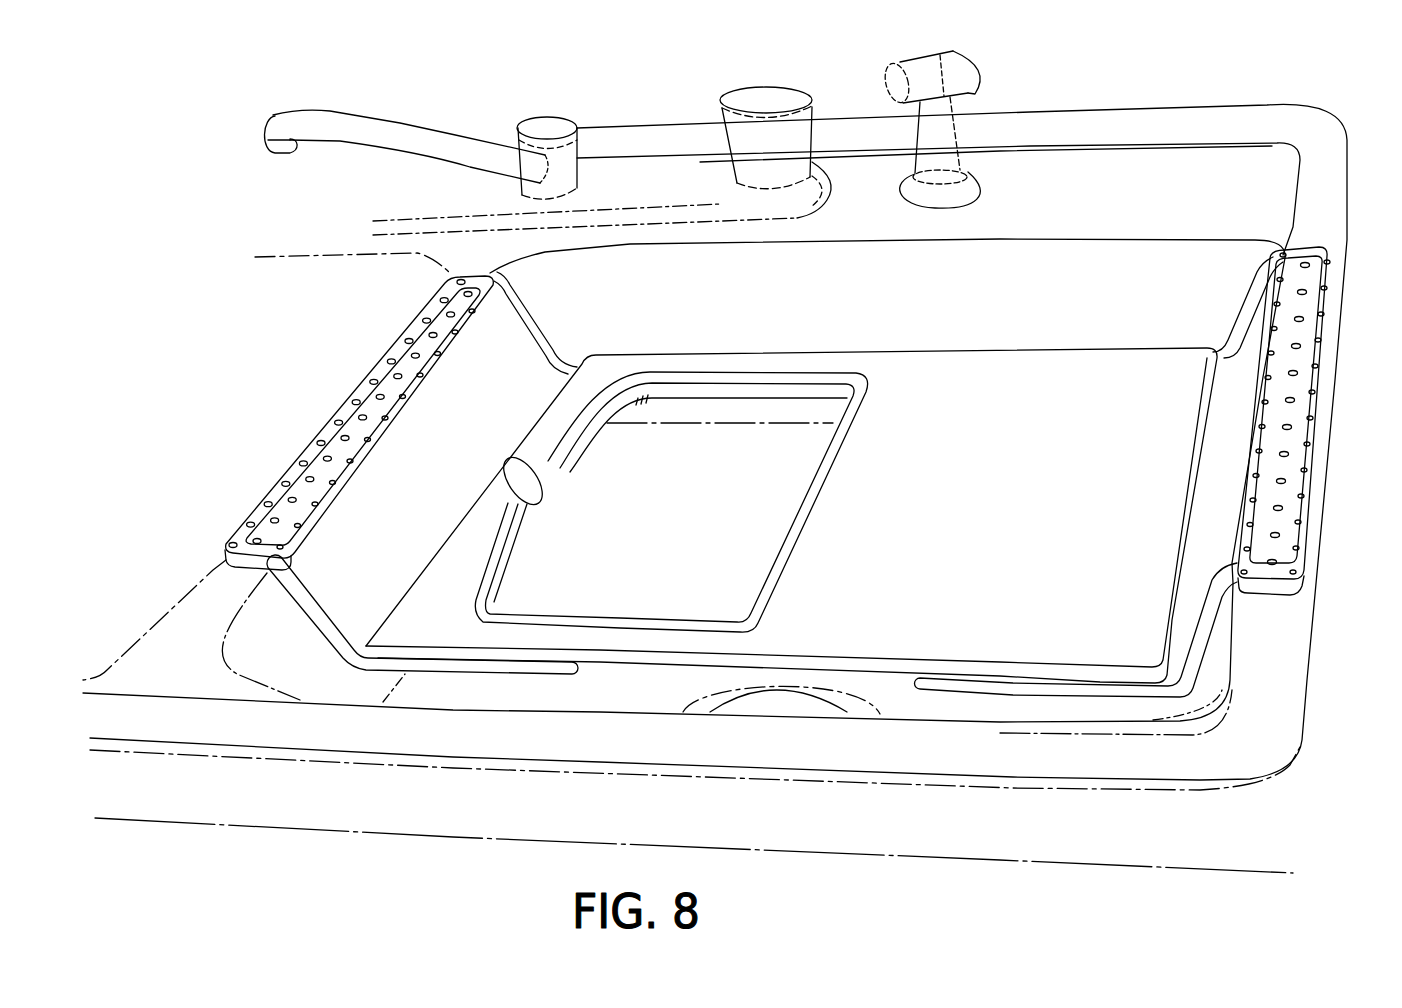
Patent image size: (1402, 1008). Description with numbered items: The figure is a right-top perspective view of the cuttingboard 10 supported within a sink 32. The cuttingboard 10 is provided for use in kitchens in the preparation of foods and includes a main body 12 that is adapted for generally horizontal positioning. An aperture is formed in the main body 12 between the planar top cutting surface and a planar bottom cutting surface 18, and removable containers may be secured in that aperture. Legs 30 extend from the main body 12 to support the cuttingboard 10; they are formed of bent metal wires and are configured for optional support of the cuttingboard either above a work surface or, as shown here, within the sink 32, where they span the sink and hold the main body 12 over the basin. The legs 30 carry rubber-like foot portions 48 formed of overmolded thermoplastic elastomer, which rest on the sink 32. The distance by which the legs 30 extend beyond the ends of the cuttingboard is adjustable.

The cuttingboard 10 is at (1137, 637).
The main body 12 is at (973, 377).
The planar bottom cutting surface 18 is at (1113, 377).
The legs 30 is at (313, 603).
The sink 32 is at (280, 660).
The rubber-like foot portions 48 is at (386, 391).